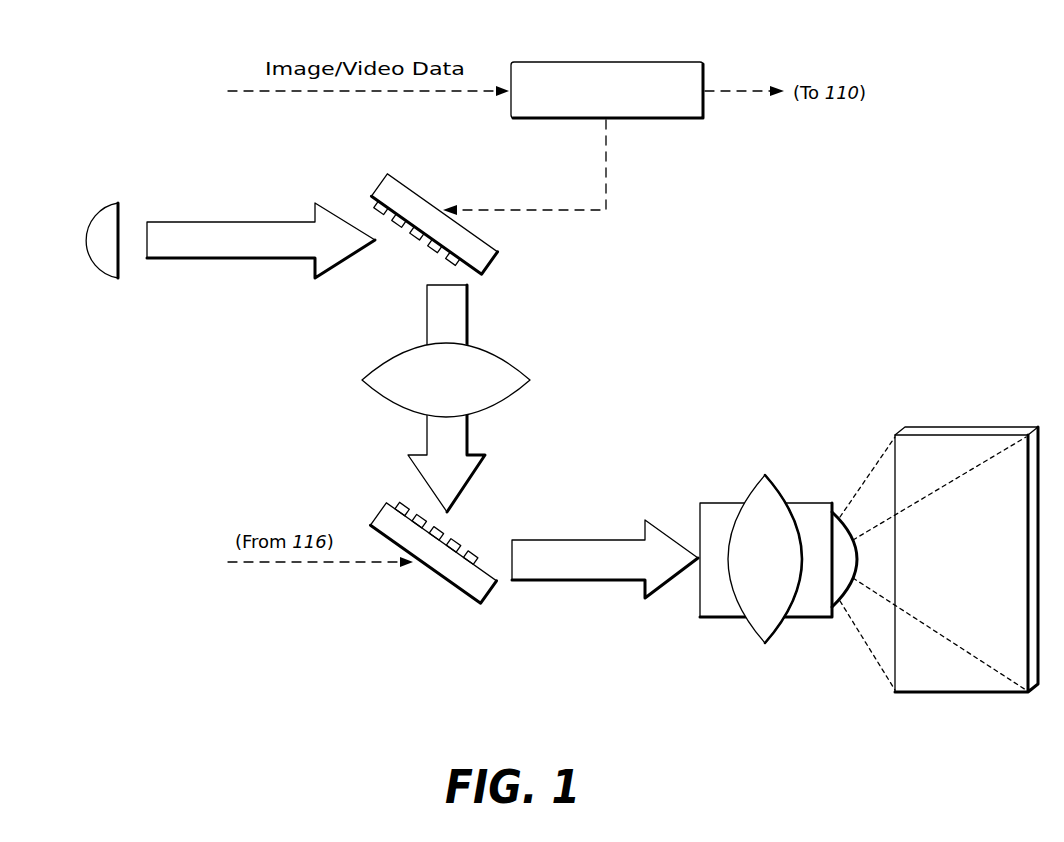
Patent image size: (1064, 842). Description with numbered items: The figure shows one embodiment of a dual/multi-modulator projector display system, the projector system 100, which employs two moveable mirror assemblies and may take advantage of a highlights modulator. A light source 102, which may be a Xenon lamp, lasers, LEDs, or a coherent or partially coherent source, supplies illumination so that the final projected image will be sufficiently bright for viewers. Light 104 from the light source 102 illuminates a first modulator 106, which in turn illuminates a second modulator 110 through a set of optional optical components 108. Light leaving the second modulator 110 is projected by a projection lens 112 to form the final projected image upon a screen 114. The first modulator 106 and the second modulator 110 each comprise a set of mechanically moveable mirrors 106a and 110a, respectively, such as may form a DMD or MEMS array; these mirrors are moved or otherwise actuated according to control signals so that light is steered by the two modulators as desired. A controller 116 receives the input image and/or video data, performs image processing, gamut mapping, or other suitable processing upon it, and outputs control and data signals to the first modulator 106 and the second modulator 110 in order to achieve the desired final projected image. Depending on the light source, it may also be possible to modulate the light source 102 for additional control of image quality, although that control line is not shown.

The projector system 100 is at (114, 50).
The light source 102 is at (110, 202).
The light 104 is at (228, 220).
The first modulator 106 is at (404, 182).
The mechanically moveable mirrors 106a is at (372, 209).
The optional optical components 108 is at (480, 343).
The second modulator 110 is at (438, 580).
The mechanically moveable mirrors 110a is at (408, 505).
The projection lens 112 is at (757, 476).
The screen 114 is at (940, 433).
The controller 116 is at (580, 60).